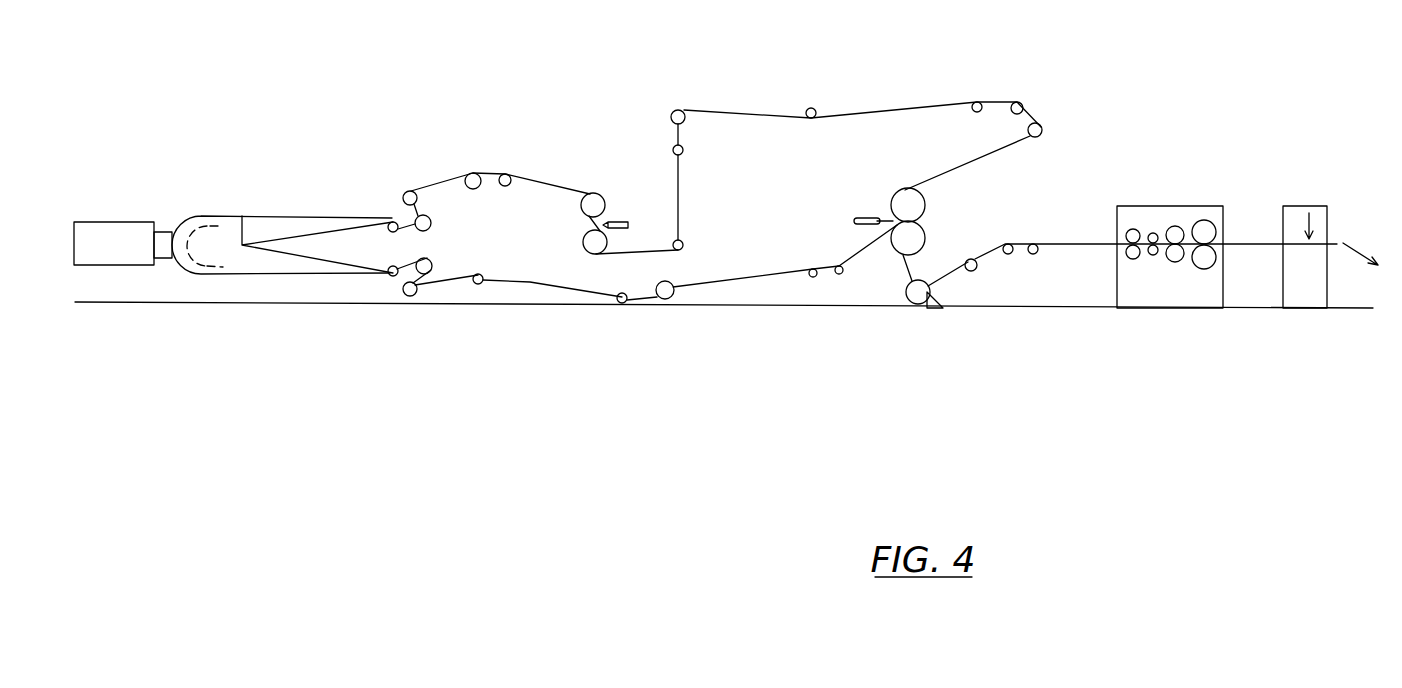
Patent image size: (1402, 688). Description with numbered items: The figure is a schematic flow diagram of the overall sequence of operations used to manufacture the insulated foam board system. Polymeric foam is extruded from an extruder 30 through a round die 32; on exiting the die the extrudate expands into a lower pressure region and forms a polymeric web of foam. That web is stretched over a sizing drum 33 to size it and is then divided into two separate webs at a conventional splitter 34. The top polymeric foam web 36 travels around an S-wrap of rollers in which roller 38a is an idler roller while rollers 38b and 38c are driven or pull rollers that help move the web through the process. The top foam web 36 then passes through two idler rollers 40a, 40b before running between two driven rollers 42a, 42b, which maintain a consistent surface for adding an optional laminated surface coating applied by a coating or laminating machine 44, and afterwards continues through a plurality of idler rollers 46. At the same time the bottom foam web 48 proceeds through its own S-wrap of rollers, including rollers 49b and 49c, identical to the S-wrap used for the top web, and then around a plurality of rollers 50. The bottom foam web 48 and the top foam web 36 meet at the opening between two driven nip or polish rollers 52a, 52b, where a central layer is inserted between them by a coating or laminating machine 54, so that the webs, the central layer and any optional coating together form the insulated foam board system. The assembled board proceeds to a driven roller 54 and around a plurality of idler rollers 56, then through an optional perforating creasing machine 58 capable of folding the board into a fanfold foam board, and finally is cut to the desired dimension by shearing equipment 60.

The extruder 30 is at (90, 222).
The round die 32 is at (160, 228).
The sizing drum 33 is at (204, 230).
The splitter 34 is at (241, 216).
The top polymeric foam web 36 is at (433, 187).
The idler roller 38a is at (382, 228).
The driven roller 38b is at (431, 222).
The driven roller 38c is at (406, 190).
The idler roller 40a is at (473, 172).
The idler roller 40b is at (505, 173).
The driven roller 42a is at (590, 192).
The driven roller 42b is at (583, 242).
The coating or laminating machine 44 is at (620, 220).
The idler rollers 46 is at (686, 119).
The bottom foam web 48 is at (447, 288).
The driven roller 49b is at (432, 265).
The driven roller 49c is at (402, 278).
The rollers 50 is at (478, 286).
The driven nip or polish roller 52a is at (926, 202).
The driven nip or polish roller 52b is at (926, 238).
The coating or laminating machine / driven roller 54 is at (865, 217).
The idler rollers 56 is at (1033, 255).
The perforating creasing machine 58 is at (1223, 290).
The shearing equipment 60 is at (1327, 290).